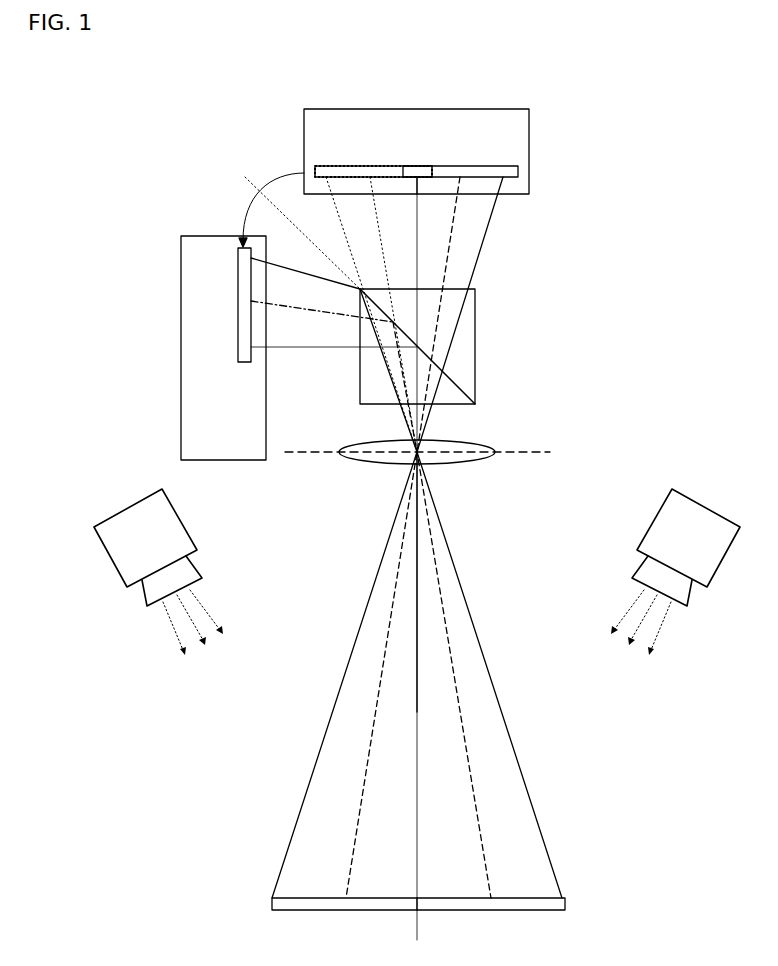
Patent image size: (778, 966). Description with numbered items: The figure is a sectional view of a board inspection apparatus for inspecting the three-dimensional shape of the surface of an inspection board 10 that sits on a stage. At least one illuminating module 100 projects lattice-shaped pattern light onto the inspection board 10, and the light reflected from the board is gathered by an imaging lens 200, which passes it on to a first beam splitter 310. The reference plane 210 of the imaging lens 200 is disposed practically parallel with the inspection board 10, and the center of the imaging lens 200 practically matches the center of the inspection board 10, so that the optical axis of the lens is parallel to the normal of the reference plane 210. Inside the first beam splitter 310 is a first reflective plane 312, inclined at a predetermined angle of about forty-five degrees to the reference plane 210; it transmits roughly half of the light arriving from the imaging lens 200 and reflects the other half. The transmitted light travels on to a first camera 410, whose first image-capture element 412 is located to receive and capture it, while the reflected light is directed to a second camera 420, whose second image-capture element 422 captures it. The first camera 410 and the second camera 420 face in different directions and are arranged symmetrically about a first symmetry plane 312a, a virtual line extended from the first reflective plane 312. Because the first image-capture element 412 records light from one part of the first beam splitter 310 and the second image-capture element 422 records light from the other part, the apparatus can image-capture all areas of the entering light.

The inspection board 10 is at (530, 905).
The illuminating module 100 is at (198, 526).
The imaging lens 200 is at (442, 447).
The reference plane 210 is at (436, 453).
The first beam splitter 310 is at (462, 340).
The first reflective plane 312 is at (458, 382).
The first symmetry plane 312a is at (326, 203).
The first camera 410 is at (490, 137).
The first image-capture element 412 is at (493, 172).
The second camera 420 is at (223, 413).
The second image-capture element 422 is at (242, 277).